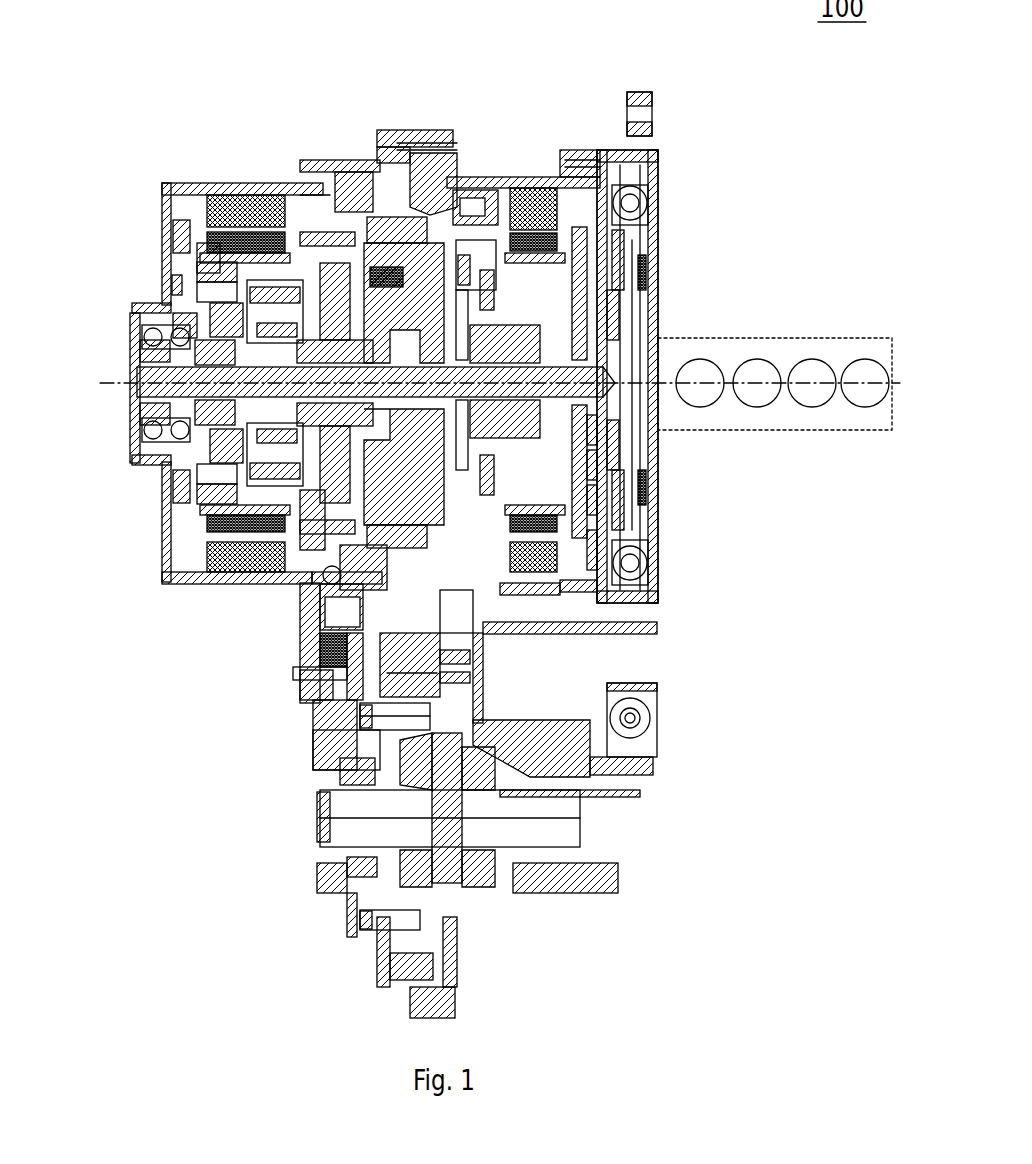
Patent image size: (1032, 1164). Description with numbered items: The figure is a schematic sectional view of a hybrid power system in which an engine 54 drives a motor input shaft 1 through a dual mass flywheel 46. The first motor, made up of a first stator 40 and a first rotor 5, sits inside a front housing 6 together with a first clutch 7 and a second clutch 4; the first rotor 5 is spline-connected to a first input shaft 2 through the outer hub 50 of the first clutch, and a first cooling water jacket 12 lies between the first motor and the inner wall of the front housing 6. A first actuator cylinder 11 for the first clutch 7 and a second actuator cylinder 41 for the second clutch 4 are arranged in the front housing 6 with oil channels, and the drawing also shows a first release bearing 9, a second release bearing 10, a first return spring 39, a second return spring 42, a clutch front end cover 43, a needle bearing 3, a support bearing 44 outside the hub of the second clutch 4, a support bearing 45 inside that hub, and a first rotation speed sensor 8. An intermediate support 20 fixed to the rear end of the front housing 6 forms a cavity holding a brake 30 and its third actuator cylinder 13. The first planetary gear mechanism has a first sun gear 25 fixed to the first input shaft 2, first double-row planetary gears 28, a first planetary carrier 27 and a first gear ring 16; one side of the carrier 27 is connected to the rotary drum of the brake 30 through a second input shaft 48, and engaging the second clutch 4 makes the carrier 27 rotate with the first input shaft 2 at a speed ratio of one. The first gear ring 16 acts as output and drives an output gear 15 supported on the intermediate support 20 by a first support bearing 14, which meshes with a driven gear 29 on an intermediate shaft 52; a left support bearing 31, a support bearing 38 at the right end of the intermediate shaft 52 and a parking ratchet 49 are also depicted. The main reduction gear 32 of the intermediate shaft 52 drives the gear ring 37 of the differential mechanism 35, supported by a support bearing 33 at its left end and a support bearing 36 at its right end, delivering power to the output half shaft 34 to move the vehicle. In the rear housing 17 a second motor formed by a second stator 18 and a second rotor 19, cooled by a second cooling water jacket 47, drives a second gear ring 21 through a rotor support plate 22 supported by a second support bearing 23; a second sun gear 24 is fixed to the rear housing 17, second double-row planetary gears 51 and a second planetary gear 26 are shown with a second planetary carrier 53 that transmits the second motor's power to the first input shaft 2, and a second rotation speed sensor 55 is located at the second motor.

The motor input shaft 1 is at (606, 335).
The first input shaft 2 is at (600, 310).
The needle bearing 3 is at (595, 285).
The second clutch 4 is at (585, 230).
The first rotor 5 is at (615, 160).
The front housing 6 is at (645, 115).
The first clutch 7 is at (527, 250).
The first rotation speed sensor 8 is at (500, 280).
The first release bearing 9 is at (470, 260).
The second release bearing 10 is at (444, 308).
The first actuator cylinder 11 is at (414, 258).
The first cooling water jacket 12 is at (547, 230).
The third actuator cylinder 13 is at (400, 180).
The first support bearing 14 is at (350, 178).
The output gear 15 is at (315, 185).
The first gear ring 16 is at (275, 190).
The rear housing 17 is at (285, 200).
The second stator 18 is at (240, 232).
The second rotor 19 is at (215, 252).
The intermediate support 20 is at (365, 170).
The second gear ring 21 is at (222, 283).
The rotor support plate 22 is at (208, 312).
The second support bearing 23 is at (150, 352).
The second sun gear 24 is at (150, 383).
The first sun gear 25 is at (150, 428).
The second planetary gear 26 is at (258, 455).
The first planetary carrier 27 is at (280, 468).
The first double-row planetary gears 28 is at (305, 520).
The driven gear 29 is at (298, 572).
The brake 30 is at (320, 585).
The left support bearing 31 is at (313, 592).
The main reduction gear 32 is at (310, 658).
The support bearing at a left end of a differential mechanism 33 is at (320, 787).
The output half shaft of the differential mechanism 34 is at (323, 842).
The assembly of the differential mechanism 35 is at (455, 800).
The support bearing at a right end of the differential mechanism 36 is at (545, 775).
The gear ring of the differential mechanism 37 is at (650, 722).
The support bearing at a right end of an intermediate shaft 38 is at (460, 660).
The first return spring 39 is at (493, 637).
The first stator 40 is at (590, 595).
The second actuator cylinder 41 is at (605, 555).
The second return spring 42 is at (615, 525).
The clutch front end cover 43 is at (600, 488).
The support bearing on the outside of a hub of the second clutch 44 is at (590, 460).
The support bearing on the inside of the hub of the second clutch 45 is at (600, 430).
The dual mass flywheel 46 is at (650, 415).
The second cooling water jacket 47 is at (325, 196).
The second input shaft 48 is at (230, 458).
The parking ratchet 49 is at (340, 770).
The outer hub of the first clutch 50 is at (605, 262).
The second double-row planetary gears 51 is at (235, 300).
The intermediate shaft 52 is at (320, 700).
The second planetary carrier 53 is at (205, 330).
The engine 54 is at (757, 385).
The second rotation speed sensor 55 is at (183, 282).